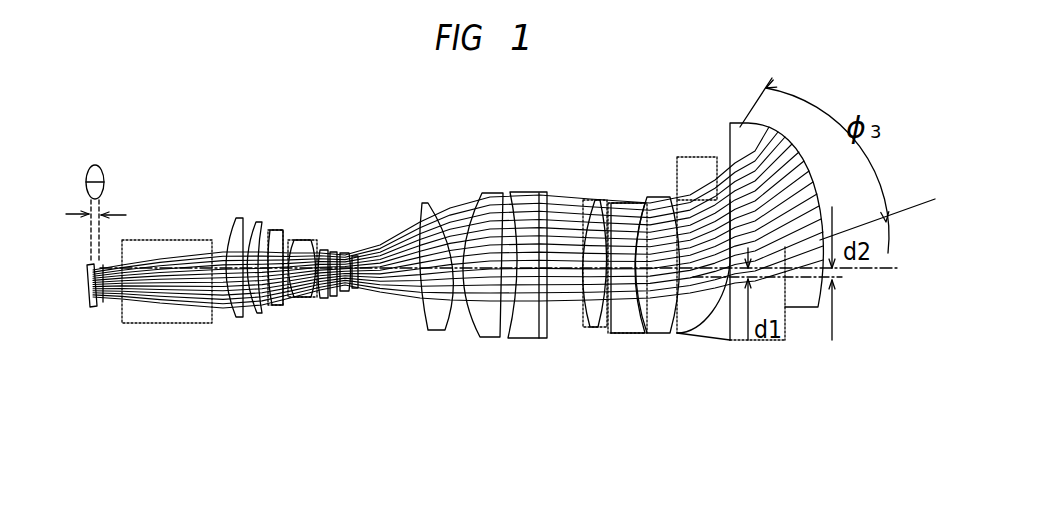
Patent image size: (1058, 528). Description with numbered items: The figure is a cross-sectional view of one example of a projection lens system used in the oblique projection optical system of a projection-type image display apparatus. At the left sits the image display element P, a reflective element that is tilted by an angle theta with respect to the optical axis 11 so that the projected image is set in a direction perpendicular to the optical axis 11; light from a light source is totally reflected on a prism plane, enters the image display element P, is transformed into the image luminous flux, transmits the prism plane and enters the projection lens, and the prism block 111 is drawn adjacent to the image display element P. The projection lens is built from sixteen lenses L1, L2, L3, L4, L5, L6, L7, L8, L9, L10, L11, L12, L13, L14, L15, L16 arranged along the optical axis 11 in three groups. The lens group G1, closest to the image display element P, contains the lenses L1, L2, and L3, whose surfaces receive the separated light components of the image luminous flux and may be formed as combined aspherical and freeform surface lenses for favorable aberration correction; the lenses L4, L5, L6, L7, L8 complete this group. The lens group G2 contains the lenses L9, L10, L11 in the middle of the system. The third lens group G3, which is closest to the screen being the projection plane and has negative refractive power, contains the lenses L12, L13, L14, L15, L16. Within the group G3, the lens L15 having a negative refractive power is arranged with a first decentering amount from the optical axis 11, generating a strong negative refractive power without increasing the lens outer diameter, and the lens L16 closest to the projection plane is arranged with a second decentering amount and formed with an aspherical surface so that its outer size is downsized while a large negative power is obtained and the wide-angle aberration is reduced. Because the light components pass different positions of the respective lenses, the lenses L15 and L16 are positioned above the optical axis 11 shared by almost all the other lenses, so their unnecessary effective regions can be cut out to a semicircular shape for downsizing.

The image display element P is at (91, 312).
The prism block 111 is at (166, 318).
The optical axis 11 is at (847, 277).
The lens group G1 is at (335, 208).
The second lens group G2 is at (545, 168).
The third lens group G3 is at (793, 137).
The lens L1 is at (240, 290).
The lens L2 is at (250, 305).
The lens L3 is at (277, 305).
The lens L4 is at (303, 297).
The lens L5 is at (316, 292).
The lens L6 is at (322, 292).
The lens L7 is at (330, 285).
The lens L8 is at (340, 285).
The lens L9 is at (457, 305).
The lens L10 is at (500, 313).
The lens L11 is at (543, 315).
The lens L12 is at (597, 318).
The lens L13 is at (632, 318).
The lens L14 is at (669, 318).
The lens L15 is at (673, 338).
The aspherical+freeform surface lens L16 is at (807, 290).